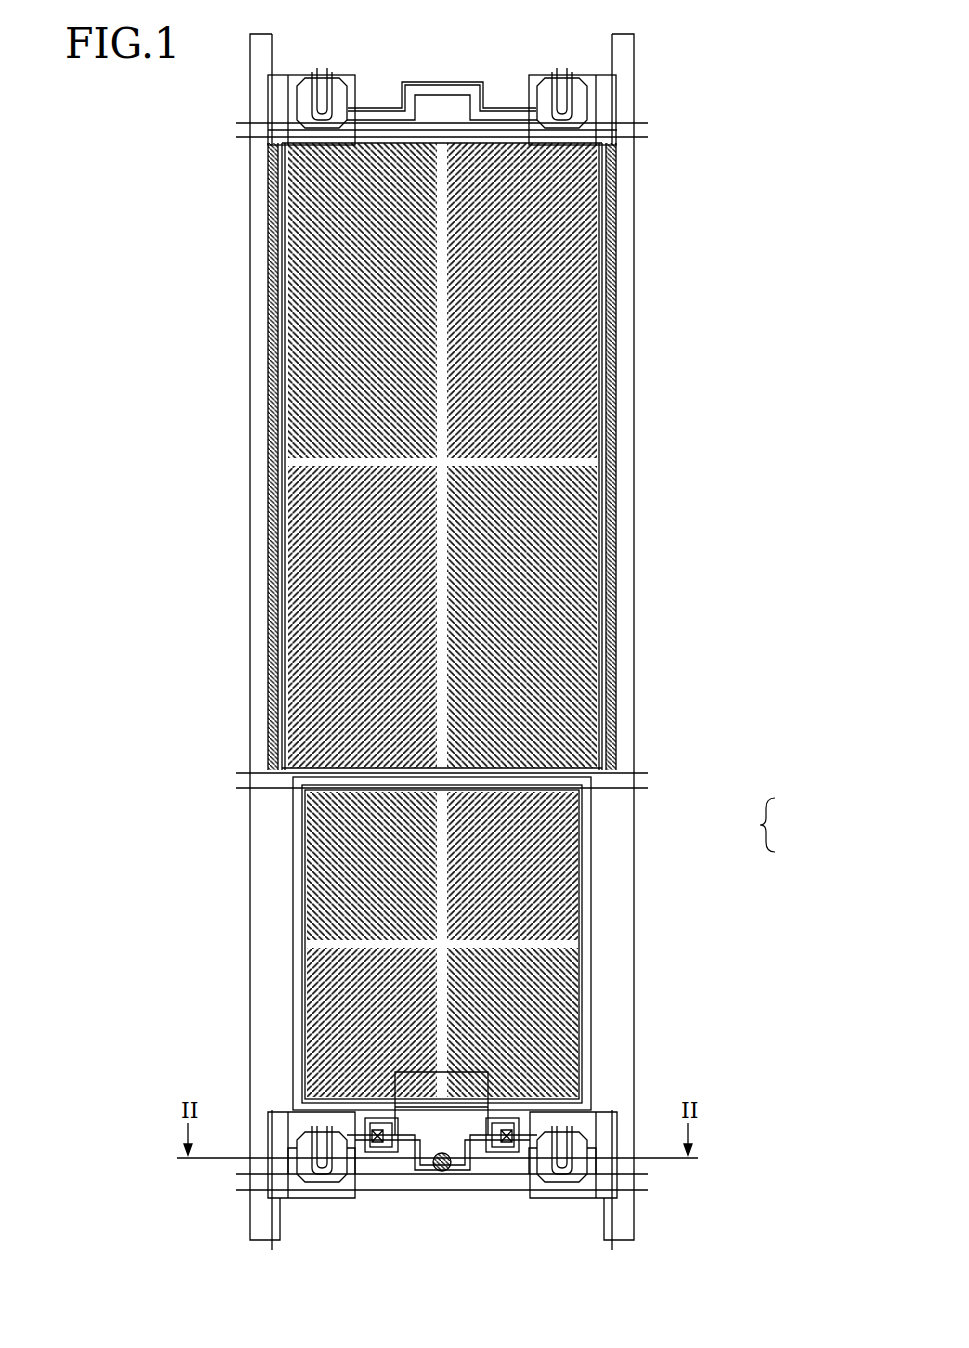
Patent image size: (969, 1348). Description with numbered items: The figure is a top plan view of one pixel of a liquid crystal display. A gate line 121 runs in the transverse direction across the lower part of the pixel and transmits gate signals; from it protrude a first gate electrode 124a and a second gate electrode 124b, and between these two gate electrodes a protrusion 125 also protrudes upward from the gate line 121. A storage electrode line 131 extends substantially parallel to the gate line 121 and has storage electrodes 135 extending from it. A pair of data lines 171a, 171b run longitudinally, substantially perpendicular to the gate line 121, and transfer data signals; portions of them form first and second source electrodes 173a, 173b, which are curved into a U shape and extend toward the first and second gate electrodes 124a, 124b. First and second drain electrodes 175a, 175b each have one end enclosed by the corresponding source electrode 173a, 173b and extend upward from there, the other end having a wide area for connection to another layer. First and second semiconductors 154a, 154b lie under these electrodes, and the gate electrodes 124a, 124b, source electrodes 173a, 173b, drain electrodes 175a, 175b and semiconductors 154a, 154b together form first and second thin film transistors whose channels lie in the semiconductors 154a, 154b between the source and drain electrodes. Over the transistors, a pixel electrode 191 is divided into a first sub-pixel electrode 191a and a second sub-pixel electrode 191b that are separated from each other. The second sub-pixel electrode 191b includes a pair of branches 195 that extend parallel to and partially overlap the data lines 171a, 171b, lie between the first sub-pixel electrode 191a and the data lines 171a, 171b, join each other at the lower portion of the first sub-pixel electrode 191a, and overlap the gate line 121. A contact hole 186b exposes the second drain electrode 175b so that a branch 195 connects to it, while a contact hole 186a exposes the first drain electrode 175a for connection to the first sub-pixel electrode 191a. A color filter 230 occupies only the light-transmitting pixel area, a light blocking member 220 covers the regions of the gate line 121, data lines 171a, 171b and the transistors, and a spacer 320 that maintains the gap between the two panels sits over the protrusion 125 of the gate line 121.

The gate line 121 is at (647, 1174).
The first gate electrode 124a is at (587, 1133).
The second gate electrode 124b is at (300, 1133).
The protrusion 125 is at (478, 1150).
The storage electrode line 131 is at (645, 773).
The storage electrode 135 is at (305, 885).
The first semiconductor 154a is at (530, 1140).
The second semiconductor 154b is at (352, 1153).
The first data line 171a is at (606, 642).
The second data line 171b is at (278, 642).
The first source electrode 173a is at (563, 1188).
The second source electrode 173b is at (326, 1183).
The first drain electrode 175a is at (572, 1165).
The second drain electrode 175b is at (317, 1178).
The contact hole 186a is at (507, 1145).
The contact hole 186b is at (378, 1143).
The pixel electrode 191 is at (751, 825).
The first sub-pixel electrode 191a is at (548, 942).
The second sub-pixel electrode 191b is at (615, 462).
The branch 195 is at (300, 1005).
The light blocking member 220 is at (267, 558).
The color filter 230 is at (270, 310).
The spacer 320 is at (442, 1172).